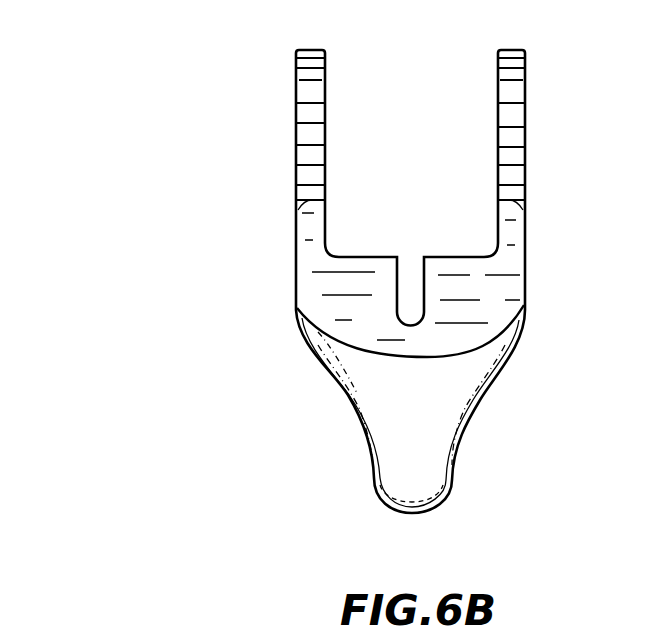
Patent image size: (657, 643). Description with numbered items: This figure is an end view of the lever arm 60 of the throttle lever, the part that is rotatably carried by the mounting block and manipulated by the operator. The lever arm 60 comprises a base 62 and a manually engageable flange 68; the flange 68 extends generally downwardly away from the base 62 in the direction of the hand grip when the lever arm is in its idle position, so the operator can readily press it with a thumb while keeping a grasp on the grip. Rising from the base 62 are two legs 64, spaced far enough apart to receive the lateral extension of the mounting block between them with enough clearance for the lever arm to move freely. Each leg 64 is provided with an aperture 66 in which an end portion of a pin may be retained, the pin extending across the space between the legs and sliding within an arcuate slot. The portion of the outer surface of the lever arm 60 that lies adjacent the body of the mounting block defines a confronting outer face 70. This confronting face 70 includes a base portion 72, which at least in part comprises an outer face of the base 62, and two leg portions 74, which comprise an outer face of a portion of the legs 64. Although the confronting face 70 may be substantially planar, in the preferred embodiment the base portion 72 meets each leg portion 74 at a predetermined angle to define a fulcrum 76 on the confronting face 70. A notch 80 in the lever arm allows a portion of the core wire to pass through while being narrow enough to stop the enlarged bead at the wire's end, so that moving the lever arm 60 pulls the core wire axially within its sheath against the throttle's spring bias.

The lever arm 60 is at (190, 209).
The base 62 is at (462, 378).
The legs 64 is at (296, 106).
The aperture 66 is at (296, 72).
The manually engageable flange 68 is at (453, 482).
The confronting outer face 70 is at (350, 322).
The base portion 72 is at (490, 290).
The leg portions 74 is at (302, 148).
The fulcrum 76 is at (296, 213).
The notch 80 is at (401, 282).